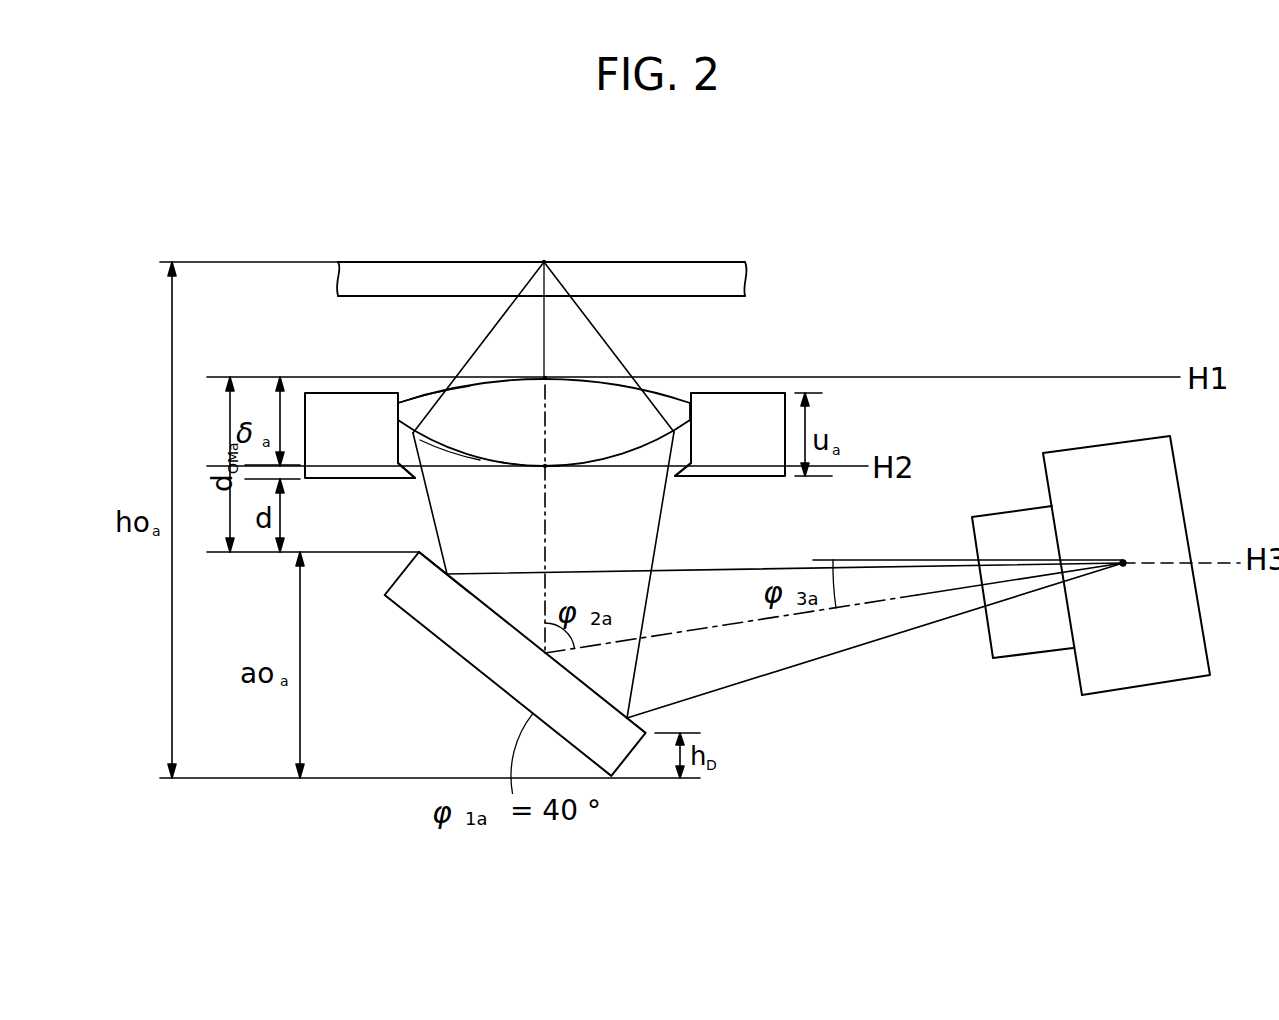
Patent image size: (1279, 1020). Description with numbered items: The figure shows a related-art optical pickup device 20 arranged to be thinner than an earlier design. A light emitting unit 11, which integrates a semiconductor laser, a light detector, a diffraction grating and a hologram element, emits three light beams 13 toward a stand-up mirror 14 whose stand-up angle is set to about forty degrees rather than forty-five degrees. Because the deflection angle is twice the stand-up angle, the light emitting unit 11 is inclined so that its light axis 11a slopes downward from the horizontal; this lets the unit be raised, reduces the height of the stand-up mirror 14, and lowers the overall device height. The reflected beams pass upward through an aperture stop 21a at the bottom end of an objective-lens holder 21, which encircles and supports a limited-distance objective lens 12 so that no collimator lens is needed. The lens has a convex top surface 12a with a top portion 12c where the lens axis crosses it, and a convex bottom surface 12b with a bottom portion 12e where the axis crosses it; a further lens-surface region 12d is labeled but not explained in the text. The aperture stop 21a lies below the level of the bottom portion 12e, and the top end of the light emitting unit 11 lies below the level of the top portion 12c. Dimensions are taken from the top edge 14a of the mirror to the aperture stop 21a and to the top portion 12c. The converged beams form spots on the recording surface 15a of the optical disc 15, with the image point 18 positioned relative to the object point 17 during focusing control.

The optical pickup device 20 is at (1032, 181).
The optical disc 15 is at (706, 268).
The recording surface 15a is at (512, 262).
The image point 18 is at (544, 262).
The limited-distance objective lens 12 is at (668, 393).
The convex top surface 12a is at (425, 405).
The convex bottom surface 12b is at (453, 457).
The top portion 12c is at (546, 378).
The lens rear surface region 12d is at (538, 458).
The bottom portion 12e is at (547, 467).
The objective-lens holder 21 is at (322, 405).
The aperture stop 21a is at (415, 480).
The stand-up mirror 14 is at (435, 630).
The top edge of stand-up mirror 14a is at (417, 556).
The light beams 13 is at (862, 645).
The light emitting unit 11 is at (1195, 640).
The light axis of light emitting unit 11a is at (1172, 437).
The object point 17 is at (1123, 568).